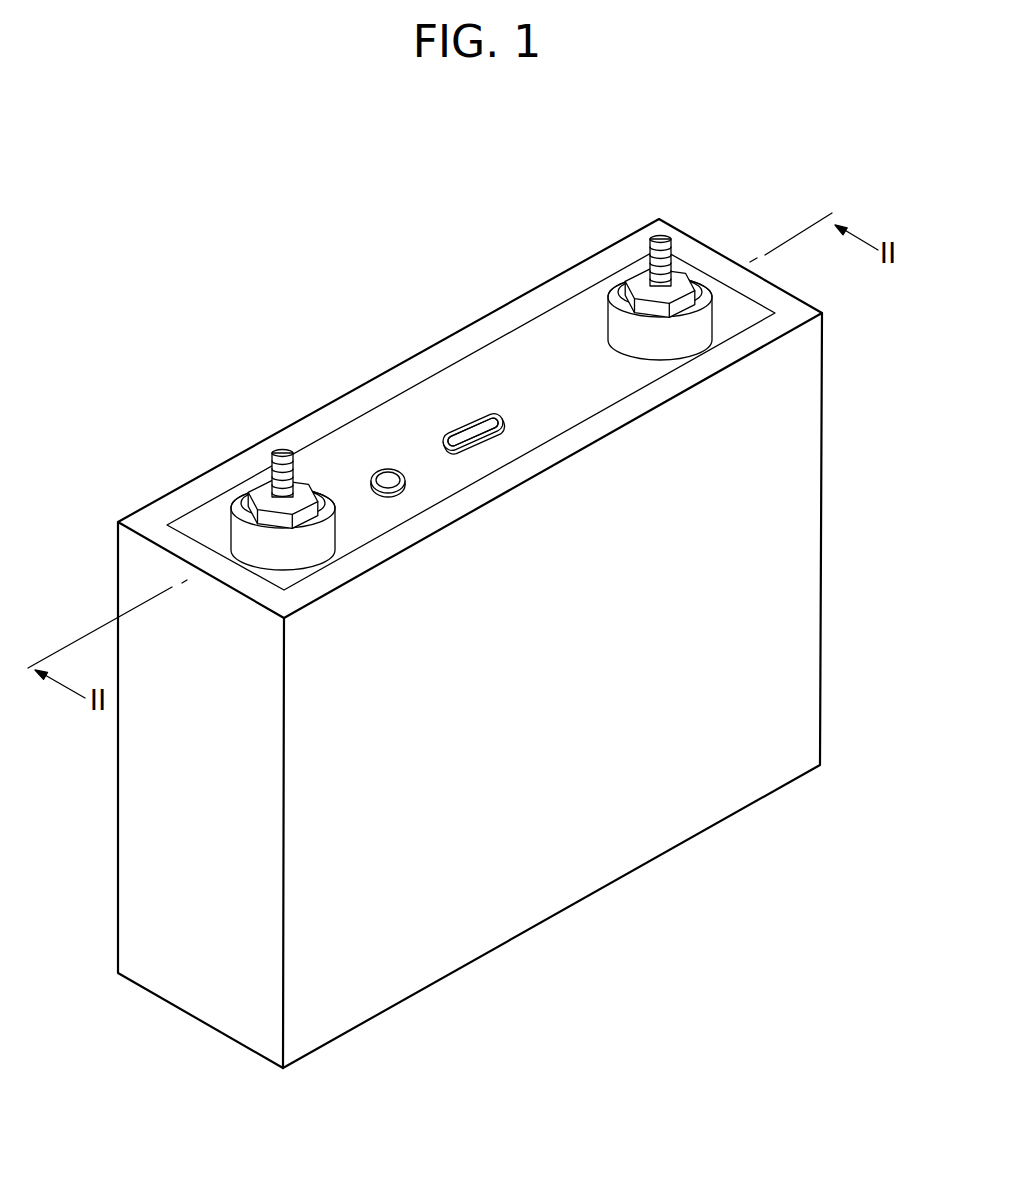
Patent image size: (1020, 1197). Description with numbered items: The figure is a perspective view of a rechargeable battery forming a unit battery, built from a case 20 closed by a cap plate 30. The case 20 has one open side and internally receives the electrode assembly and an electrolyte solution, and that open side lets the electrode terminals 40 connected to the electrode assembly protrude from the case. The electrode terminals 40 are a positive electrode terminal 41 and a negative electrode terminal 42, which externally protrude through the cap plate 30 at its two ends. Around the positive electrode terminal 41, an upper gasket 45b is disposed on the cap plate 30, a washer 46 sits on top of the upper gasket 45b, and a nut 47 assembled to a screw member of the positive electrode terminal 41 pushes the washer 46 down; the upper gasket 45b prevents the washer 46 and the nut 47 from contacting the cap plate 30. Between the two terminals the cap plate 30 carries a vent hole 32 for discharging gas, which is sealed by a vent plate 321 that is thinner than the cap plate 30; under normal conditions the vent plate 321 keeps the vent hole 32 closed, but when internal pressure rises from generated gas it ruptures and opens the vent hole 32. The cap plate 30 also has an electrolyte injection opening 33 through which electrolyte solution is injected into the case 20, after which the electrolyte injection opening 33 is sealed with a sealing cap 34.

The case 20 is at (790, 478).
The cap plate 30 is at (609, 375).
The vent hole 32 is at (477, 448).
The vent plate 321 is at (483, 402).
The electrolyte injection opening 33 is at (395, 490).
The sealing cap 34 is at (393, 470).
The electrode terminals 40 is at (587, 150).
The positive electrode terminal 41 is at (283, 450).
The negative electrode terminal 42 is at (655, 238).
The upper gasket 45b is at (236, 532).
The washer 46 is at (247, 508).
The nut 47 is at (262, 492).